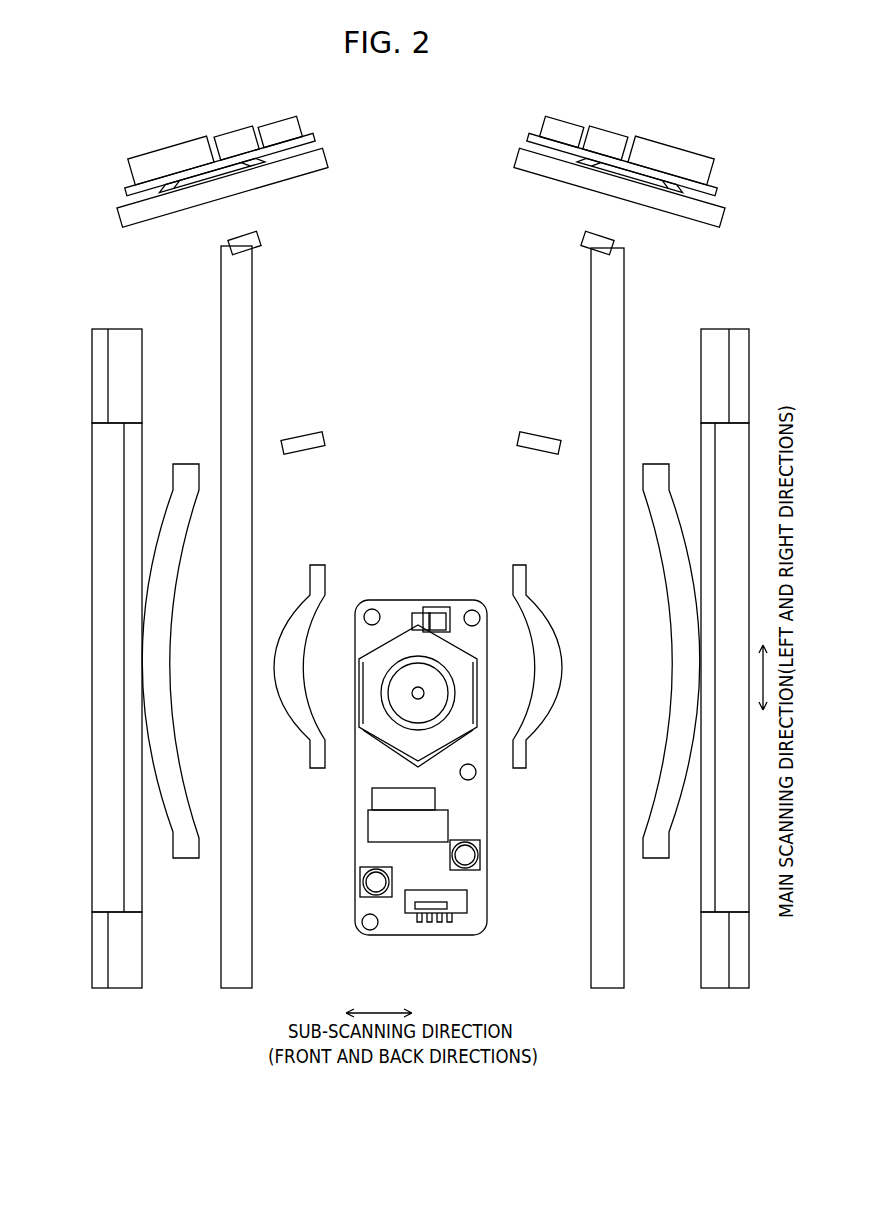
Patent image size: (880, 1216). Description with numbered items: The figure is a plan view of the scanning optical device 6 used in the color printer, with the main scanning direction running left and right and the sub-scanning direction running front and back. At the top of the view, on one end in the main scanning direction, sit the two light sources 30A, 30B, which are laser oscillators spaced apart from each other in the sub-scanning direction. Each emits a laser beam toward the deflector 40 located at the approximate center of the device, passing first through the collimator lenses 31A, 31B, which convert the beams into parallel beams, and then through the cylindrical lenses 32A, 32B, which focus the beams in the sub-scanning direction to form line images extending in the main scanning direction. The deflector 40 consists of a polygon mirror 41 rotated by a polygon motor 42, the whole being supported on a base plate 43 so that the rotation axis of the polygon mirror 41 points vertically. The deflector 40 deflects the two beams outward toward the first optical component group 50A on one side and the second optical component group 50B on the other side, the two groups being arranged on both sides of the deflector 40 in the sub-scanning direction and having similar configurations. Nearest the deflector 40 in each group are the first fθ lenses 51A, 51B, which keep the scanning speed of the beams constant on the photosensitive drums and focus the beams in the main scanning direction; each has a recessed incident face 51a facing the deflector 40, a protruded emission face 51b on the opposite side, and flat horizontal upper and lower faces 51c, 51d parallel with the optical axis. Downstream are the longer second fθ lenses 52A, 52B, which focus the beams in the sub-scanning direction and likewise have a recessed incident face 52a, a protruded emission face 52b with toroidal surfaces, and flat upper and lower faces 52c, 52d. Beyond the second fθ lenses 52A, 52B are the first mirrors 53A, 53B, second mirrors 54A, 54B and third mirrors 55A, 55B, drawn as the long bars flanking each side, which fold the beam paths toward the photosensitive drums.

The scanning optical device 6 is at (399, 128).
The light source 30A is at (327, 160).
The light source 30B is at (521, 162).
The collimator lens 31A is at (262, 238).
The collimator lens 31B is at (581, 242).
The cylindrical lens 32A is at (322, 439).
The cylindrical lens 32B is at (520, 438).
The deflector 40 is at (425, 584).
The polygon mirror 41 is at (405, 631).
The polygon motor 42 is at (455, 631).
The base plate 43 is at (467, 819).
The first optical component group 50A is at (165, 286).
The second optical component group 50B is at (674, 286).
The first fθ lens 51A is at (318, 563).
The first fθ lens 51B is at (520, 563).
The incident face 51a is at (313, 651).
The emission face 51b is at (276, 630).
The upper face 51c is at (286, 692).
The lower face 51d is at (297, 745).
The second fθ lens 52A is at (186, 463).
The second fθ lens 52B is at (652, 463).
The incident face 52a is at (176, 617).
The emission face 52b is at (147, 653).
The upper face 52c is at (158, 694).
The lower face 52d is at (160, 730).
The first mirror 53A is at (99, 522).
The first mirror 53B is at (728, 452).
The second mirror 54A is at (115, 390).
The second mirror 54B is at (725, 380).
The third mirror 55A is at (226, 338).
The third mirror 55B is at (610, 338).